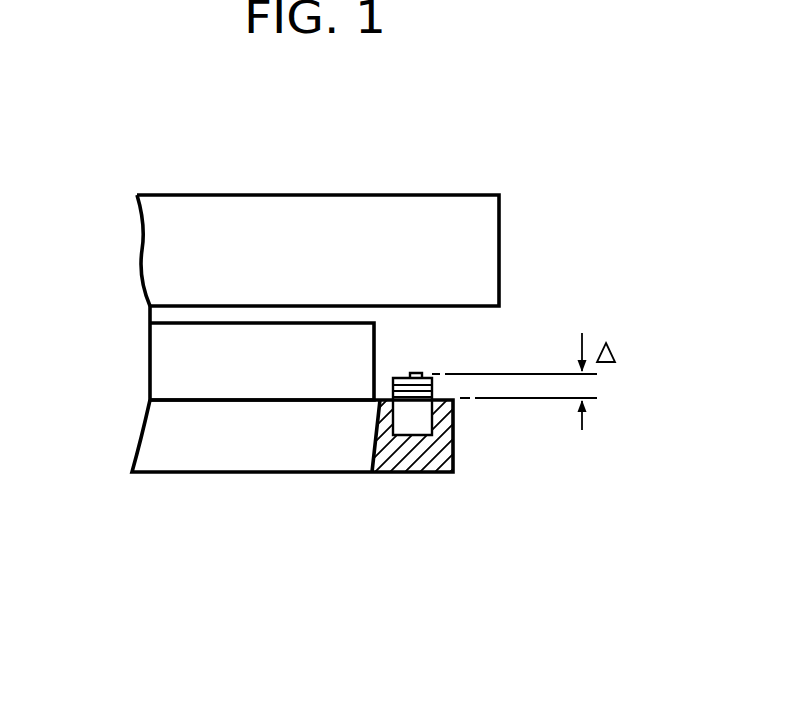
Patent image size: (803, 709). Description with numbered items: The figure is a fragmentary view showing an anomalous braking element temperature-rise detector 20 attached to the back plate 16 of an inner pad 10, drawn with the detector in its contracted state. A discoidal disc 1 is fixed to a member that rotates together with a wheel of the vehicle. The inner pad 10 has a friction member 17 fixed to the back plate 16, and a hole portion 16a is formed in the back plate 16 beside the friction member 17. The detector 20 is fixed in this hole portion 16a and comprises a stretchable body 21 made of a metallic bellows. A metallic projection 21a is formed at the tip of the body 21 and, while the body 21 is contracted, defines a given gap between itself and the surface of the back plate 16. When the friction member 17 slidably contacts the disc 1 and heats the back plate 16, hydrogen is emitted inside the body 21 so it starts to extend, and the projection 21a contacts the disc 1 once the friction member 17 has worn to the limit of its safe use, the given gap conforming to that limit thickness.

The disc 1 is at (433, 213).
The inner pad 10 is at (195, 483).
The back plate 16 is at (306, 478).
The hole portion 16a is at (432, 424).
The friction member 17 is at (165, 367).
The anomalous braking element temperature-rise detector 20 is at (443, 366).
The stretchable body 21 is at (467, 389).
The metallic projection 21a is at (417, 374).